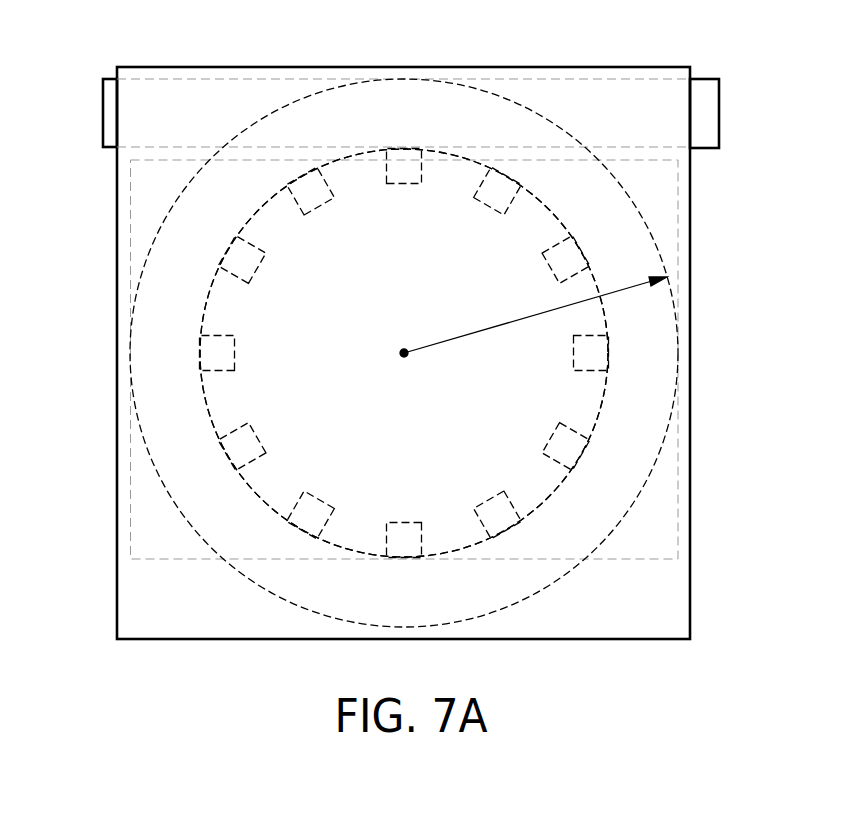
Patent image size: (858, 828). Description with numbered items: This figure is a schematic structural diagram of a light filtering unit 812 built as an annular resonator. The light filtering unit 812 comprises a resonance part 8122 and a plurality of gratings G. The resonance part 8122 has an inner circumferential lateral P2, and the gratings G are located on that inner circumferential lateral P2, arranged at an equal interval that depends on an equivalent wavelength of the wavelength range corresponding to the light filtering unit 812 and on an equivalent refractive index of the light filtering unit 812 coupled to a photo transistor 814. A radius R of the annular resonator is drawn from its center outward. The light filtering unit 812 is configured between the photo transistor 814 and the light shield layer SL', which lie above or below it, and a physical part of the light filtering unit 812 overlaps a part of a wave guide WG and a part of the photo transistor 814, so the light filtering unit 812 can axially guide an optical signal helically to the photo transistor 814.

The resonance part 8122 is at (404, 117).
The light filtering unit 812 is at (527, 105).
The photo transistor 814 is at (678, 511).
The wave guide WG is at (708, 114).
The gratings G is at (494, 197).
The inner circumferential lateral P2 is at (462, 154).
The radius R is at (533, 317).
The light shield layer SL' is at (403, 389).